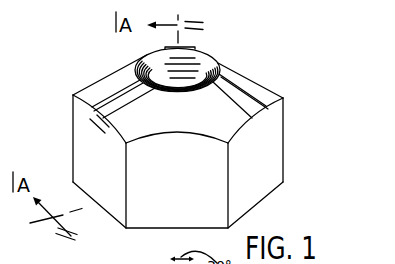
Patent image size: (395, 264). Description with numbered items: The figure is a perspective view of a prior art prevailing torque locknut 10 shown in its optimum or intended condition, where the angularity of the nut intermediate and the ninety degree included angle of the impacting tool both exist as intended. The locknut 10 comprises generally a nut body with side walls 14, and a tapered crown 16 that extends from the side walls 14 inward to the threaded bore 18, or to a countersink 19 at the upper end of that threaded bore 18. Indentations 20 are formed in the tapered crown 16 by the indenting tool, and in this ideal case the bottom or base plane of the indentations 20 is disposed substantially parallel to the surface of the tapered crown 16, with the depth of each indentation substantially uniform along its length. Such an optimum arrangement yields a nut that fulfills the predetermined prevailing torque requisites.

The prevailing torque locknut 10 is at (202, 143).
The side walls 14 is at (109, 197).
The tapered crown 16 is at (232, 82).
The threaded bore 18 is at (212, 72).
The countersink 19 is at (207, 52).
The indentations 20 is at (117, 102).